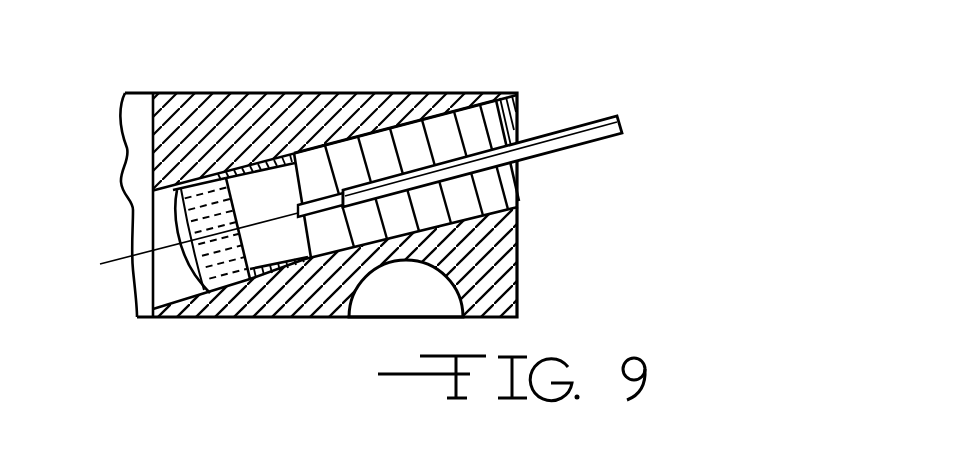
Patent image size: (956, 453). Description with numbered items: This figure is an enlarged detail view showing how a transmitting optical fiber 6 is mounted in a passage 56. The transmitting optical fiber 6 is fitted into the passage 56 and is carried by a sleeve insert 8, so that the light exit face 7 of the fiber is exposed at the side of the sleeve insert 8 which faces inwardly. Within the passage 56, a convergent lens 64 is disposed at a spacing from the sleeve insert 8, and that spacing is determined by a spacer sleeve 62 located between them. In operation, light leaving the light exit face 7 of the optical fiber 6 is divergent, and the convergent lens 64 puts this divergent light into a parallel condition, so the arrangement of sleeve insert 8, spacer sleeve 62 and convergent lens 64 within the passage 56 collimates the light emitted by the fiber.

The transmitting optical fiber 6 is at (588, 123).
The light exit face 7 is at (298, 213).
The sleeve insert 8 is at (412, 142).
The passage 56 is at (268, 210).
The spacer sleeve 62 is at (249, 166).
The convergent lens 64 is at (221, 283).